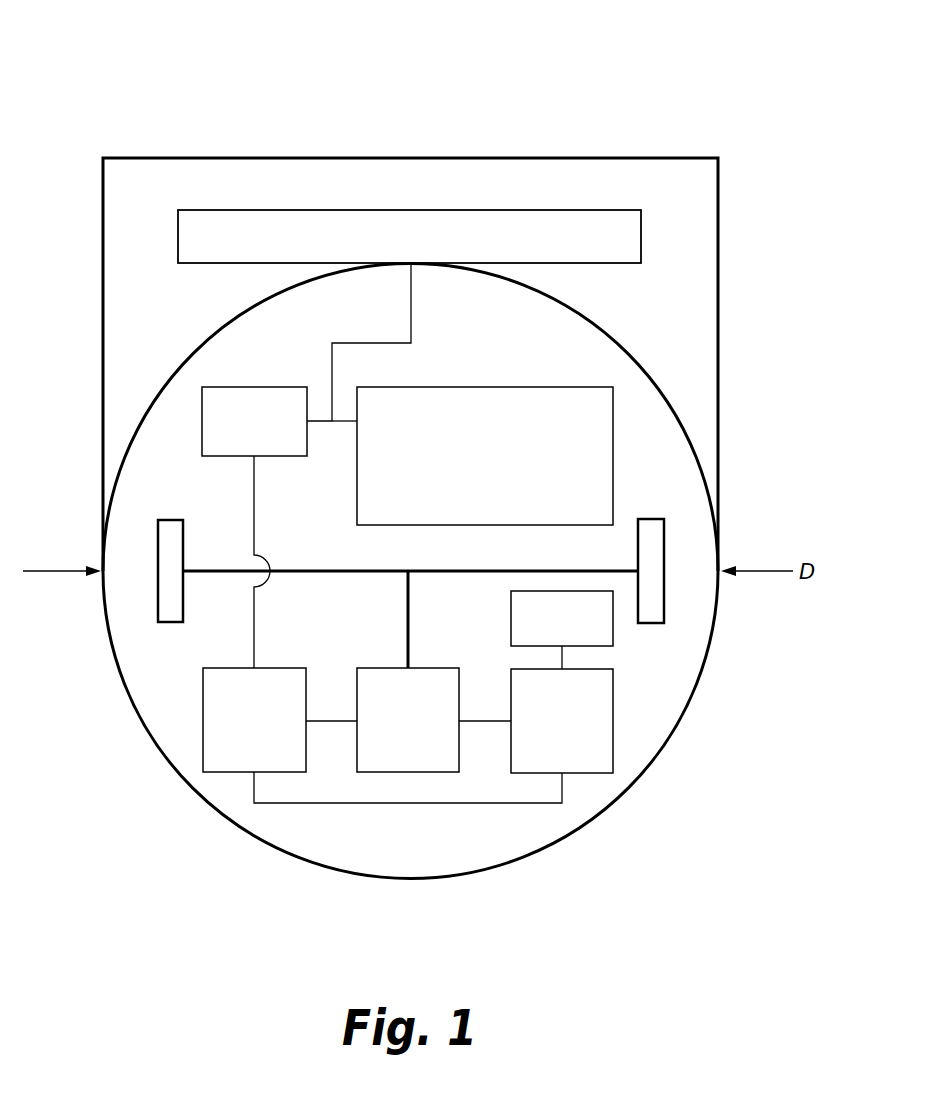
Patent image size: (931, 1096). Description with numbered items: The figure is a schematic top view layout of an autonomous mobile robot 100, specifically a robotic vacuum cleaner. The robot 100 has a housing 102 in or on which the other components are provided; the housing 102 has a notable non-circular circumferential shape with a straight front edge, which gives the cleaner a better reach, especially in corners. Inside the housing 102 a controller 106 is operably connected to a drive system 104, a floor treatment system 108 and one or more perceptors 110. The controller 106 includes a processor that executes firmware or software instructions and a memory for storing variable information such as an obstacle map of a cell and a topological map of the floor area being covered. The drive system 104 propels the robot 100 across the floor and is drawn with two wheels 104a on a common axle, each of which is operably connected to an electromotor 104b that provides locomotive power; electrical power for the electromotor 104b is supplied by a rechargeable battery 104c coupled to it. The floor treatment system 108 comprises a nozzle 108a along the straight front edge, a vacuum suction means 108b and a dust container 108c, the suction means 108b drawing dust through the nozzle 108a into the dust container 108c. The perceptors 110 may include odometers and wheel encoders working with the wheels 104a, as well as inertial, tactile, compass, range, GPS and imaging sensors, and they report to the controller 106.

The autonomous mobile robot 100 is at (202, 92).
The housing 102 is at (669, 343).
The drive system 104 is at (156, 699).
The wheels 104a is at (169, 571).
The electromotor 104b is at (384, 727).
The rechargeable battery 104c is at (230, 727).
The controller 106 is at (545, 727).
The floor treatment system 108 is at (655, 303).
The nozzle 108a is at (384, 249).
The vacuum suction means 108b is at (230, 429).
The dust container 108c is at (460, 466).
The perceptors 110 is at (545, 630).